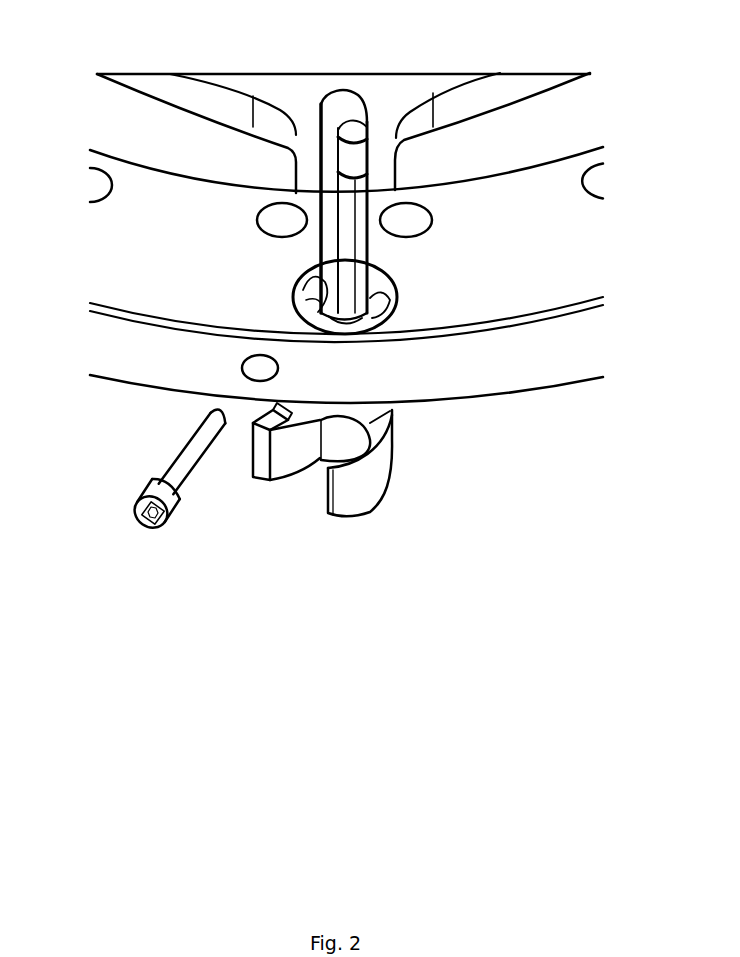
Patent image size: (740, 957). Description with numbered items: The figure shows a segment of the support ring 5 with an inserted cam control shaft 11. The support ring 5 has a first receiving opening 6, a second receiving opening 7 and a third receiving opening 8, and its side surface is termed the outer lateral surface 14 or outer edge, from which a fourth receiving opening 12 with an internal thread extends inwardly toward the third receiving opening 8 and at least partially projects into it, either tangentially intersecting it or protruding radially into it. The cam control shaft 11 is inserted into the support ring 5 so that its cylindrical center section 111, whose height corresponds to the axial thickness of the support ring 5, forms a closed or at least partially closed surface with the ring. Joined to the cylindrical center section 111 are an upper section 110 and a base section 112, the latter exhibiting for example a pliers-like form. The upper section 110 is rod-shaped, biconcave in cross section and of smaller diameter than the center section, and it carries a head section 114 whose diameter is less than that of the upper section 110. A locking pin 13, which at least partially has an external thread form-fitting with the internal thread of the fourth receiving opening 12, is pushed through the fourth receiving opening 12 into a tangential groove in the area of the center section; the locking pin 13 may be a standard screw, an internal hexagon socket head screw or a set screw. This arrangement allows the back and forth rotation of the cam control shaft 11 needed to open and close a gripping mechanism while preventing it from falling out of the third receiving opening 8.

The cam control shaft 11 is at (308, 93).
The head section 114 is at (358, 113).
The upper section 110 is at (358, 247).
The cylindrical center section 111 is at (301, 295).
The third receiving opening 8 is at (412, 289).
The first receiving opening 6 is at (265, 205).
The second receiving opening 7 is at (405, 200).
The support ring 5 is at (498, 295).
The outer lateral surface 14 is at (421, 365).
The fourth receiving opening 12 is at (238, 374).
The locking pin 13 is at (184, 500).
The base section 112 is at (364, 511).